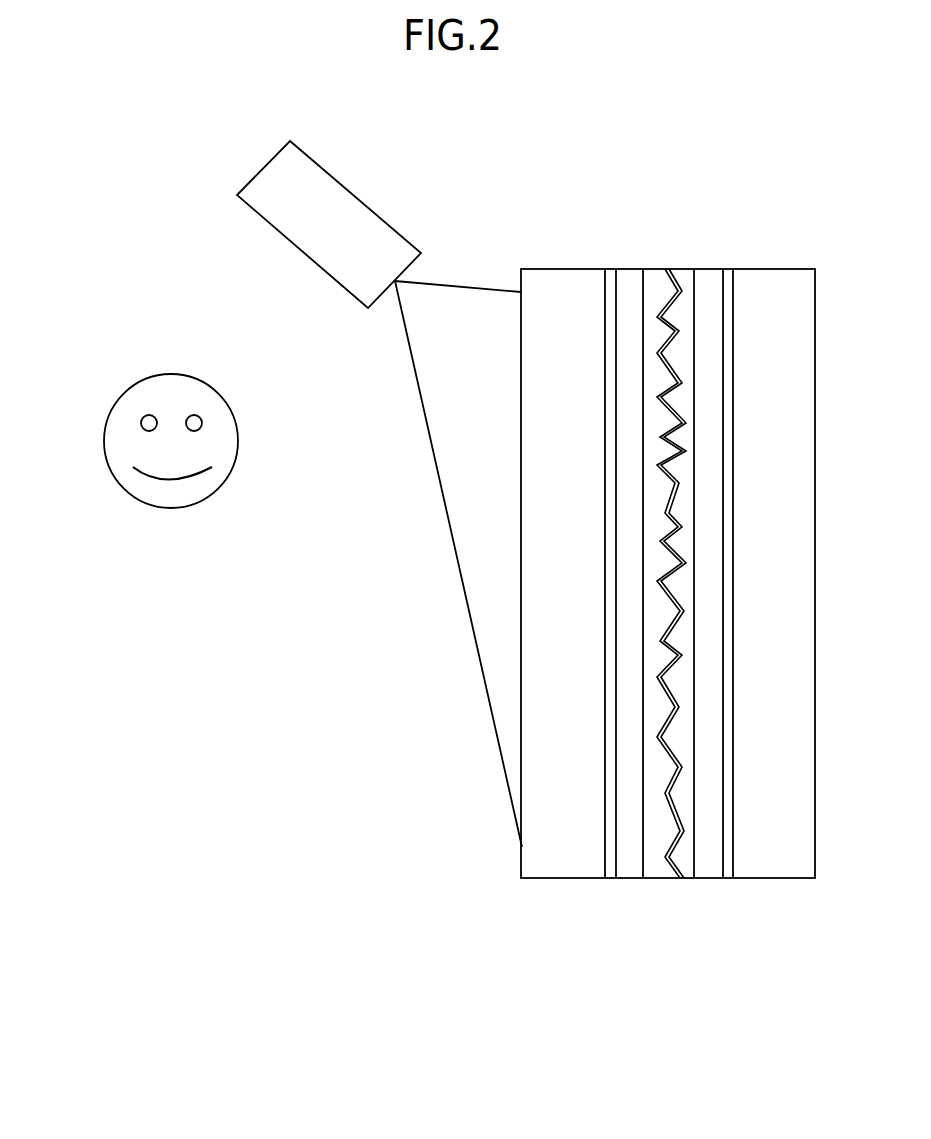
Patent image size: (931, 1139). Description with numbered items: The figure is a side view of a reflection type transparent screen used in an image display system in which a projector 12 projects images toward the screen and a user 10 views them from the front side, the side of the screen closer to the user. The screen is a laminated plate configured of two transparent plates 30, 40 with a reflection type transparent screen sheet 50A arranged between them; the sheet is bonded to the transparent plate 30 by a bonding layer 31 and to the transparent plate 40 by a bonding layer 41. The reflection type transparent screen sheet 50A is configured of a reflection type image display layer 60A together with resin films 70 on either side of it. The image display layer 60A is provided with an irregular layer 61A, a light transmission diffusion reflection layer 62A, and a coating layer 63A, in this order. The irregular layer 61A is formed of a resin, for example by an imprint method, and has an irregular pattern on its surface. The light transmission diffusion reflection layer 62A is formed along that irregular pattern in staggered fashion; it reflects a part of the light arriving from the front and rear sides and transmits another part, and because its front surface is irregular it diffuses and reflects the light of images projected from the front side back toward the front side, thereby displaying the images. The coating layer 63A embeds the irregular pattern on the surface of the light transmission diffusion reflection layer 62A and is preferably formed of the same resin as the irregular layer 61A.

The user 10 is at (115, 403).
The projector 12 is at (357, 192).
The transparent plate 30 is at (563, 277).
The bonding layer 31 is at (610, 277).
The transparent plate 40 is at (775, 277).
The bonding layer 41 is at (728, 277).
The reflection type transparent screen sheet 50A is at (802, 977).
The reflection type image display layer 60A is at (745, 935).
The irregular layer 61A is at (630, 878).
The light transmission diffusion reflection layer 62A is at (660, 878).
The coating layer 63A is at (685, 878).
The resin film 70 is at (647, 878).